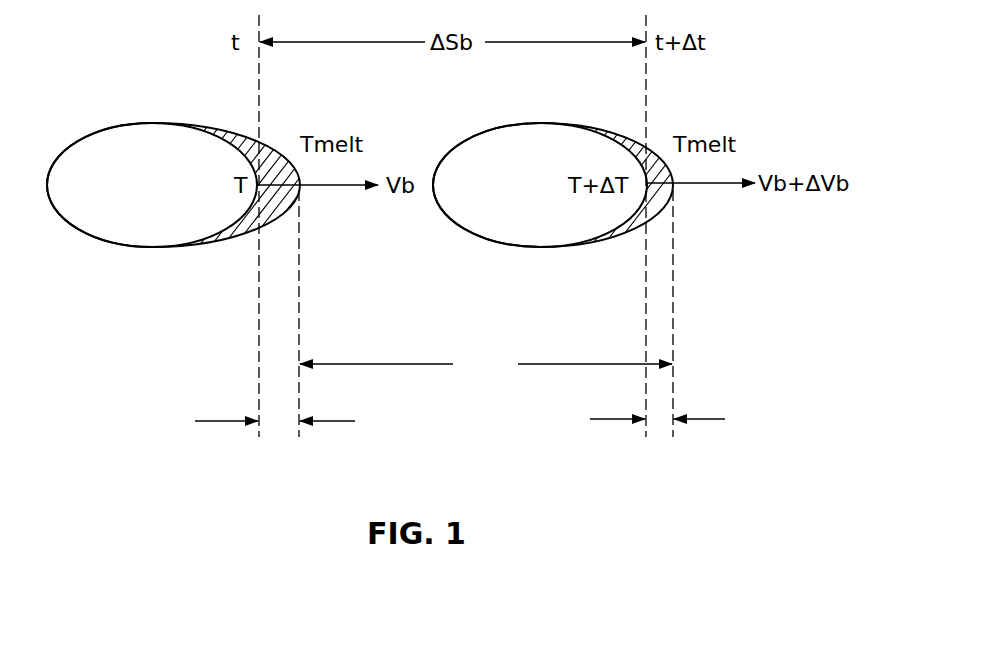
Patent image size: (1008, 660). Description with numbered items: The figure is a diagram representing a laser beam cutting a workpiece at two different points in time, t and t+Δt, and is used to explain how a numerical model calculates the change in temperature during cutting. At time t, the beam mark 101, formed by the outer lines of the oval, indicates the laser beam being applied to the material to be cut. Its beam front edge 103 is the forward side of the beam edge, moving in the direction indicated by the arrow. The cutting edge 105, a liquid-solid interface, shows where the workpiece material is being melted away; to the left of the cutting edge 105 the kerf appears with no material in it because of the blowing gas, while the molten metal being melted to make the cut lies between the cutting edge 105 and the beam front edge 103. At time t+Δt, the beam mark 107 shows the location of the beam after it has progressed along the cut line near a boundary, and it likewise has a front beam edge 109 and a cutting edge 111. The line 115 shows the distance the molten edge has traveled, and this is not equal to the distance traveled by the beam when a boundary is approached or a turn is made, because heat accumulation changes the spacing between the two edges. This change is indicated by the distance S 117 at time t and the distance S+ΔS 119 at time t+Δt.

The beam mark 101 is at (83, 237).
The beam front edge 103 is at (270, 147).
The cutting edge 105 is at (233, 148).
The beam mark 107 is at (485, 240).
The front beam edge 109 is at (650, 153).
The cutting edge 111 is at (613, 142).
The line 115 is at (417, 364).
The distance S 117 is at (272, 423).
The distance S+ΔS 119 is at (658, 420).